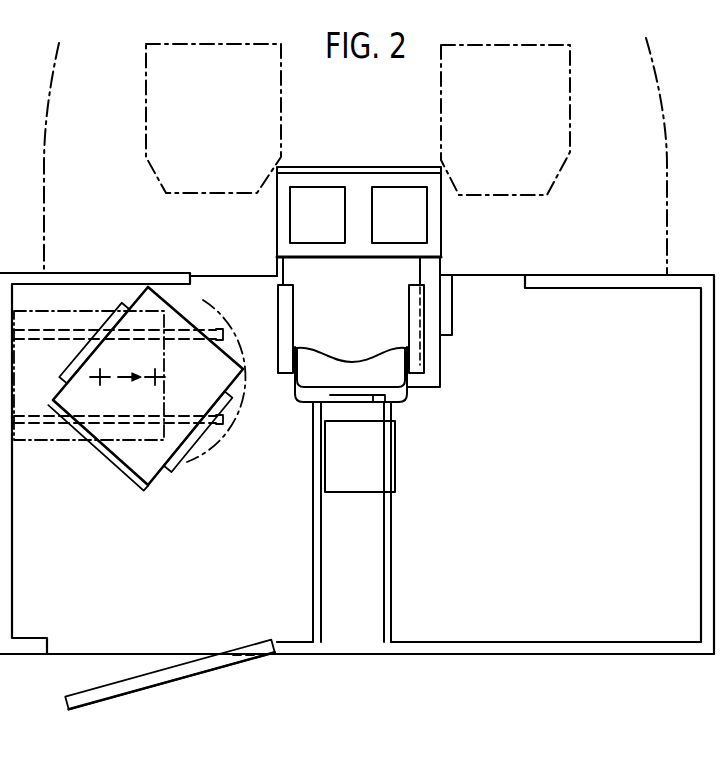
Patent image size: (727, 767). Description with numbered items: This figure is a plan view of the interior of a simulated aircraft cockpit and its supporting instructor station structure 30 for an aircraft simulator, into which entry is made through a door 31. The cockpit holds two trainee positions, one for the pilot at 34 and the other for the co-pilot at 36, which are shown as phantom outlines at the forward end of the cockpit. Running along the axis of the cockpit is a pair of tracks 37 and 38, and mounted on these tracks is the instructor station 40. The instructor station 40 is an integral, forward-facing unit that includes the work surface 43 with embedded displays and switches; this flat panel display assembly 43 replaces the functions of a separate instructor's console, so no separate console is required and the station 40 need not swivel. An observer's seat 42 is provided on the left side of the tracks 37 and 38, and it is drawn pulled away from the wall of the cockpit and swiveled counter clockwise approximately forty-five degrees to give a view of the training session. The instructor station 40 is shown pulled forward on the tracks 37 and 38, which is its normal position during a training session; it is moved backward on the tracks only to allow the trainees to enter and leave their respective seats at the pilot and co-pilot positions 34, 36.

The instructor station structure 30 is at (443, 666).
The door 31 is at (180, 683).
The pilot trainee position 34 is at (570, 67).
The co-pilot trainee position 36 is at (146, 90).
The track 37 is at (313, 592).
The track 38 is at (391, 590).
The instructor station 40 is at (412, 396).
The observer's seat 42 is at (185, 462).
The work surface 43 is at (361, 167).